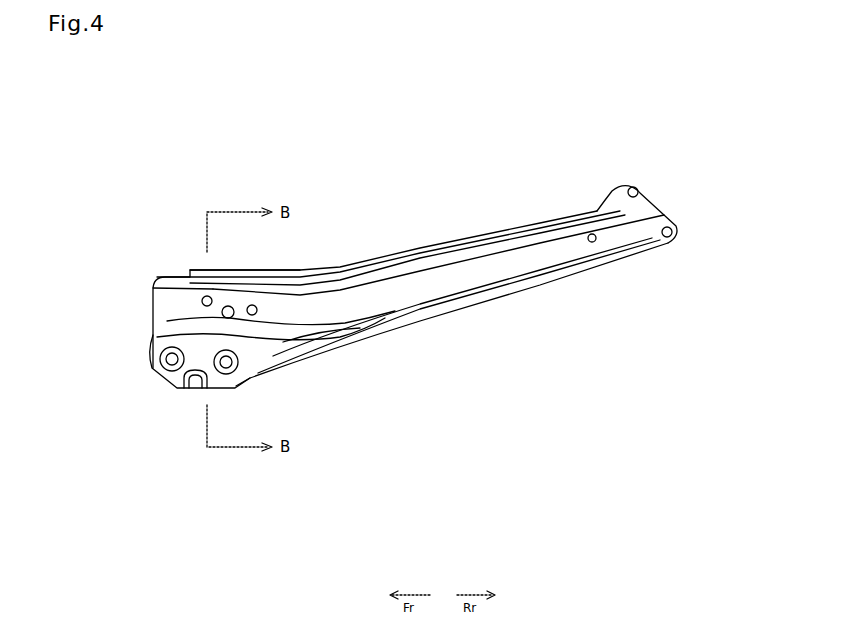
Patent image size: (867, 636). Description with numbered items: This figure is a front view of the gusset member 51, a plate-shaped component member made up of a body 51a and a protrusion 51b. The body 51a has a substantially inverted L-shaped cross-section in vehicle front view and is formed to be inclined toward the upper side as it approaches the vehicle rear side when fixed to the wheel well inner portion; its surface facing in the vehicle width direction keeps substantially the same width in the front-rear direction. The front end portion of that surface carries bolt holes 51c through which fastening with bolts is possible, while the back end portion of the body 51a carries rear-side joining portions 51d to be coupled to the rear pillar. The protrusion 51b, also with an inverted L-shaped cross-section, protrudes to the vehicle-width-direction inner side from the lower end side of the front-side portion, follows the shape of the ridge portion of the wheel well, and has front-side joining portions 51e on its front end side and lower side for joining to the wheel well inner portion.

The gusset member 51 is at (391, 184).
The body 51a is at (520, 253).
The protrusion 51b is at (285, 350).
The bolt holes 51c is at (209, 296).
The rear-side joining portions 51d is at (635, 187).
The front-side joining portions 51e is at (270, 398).